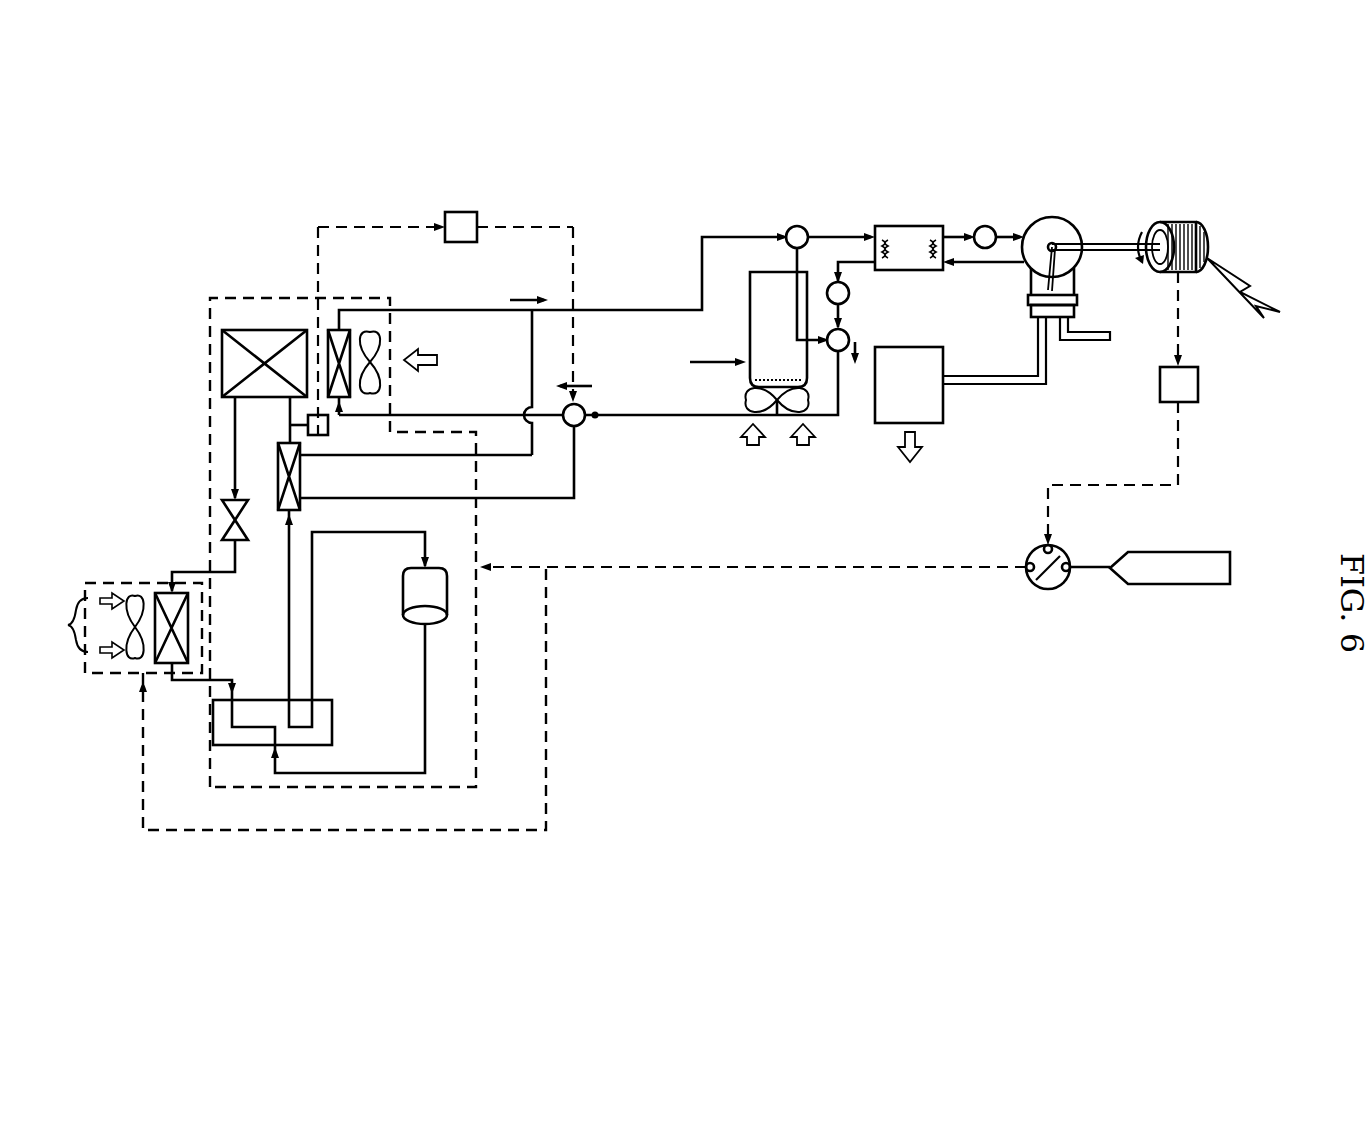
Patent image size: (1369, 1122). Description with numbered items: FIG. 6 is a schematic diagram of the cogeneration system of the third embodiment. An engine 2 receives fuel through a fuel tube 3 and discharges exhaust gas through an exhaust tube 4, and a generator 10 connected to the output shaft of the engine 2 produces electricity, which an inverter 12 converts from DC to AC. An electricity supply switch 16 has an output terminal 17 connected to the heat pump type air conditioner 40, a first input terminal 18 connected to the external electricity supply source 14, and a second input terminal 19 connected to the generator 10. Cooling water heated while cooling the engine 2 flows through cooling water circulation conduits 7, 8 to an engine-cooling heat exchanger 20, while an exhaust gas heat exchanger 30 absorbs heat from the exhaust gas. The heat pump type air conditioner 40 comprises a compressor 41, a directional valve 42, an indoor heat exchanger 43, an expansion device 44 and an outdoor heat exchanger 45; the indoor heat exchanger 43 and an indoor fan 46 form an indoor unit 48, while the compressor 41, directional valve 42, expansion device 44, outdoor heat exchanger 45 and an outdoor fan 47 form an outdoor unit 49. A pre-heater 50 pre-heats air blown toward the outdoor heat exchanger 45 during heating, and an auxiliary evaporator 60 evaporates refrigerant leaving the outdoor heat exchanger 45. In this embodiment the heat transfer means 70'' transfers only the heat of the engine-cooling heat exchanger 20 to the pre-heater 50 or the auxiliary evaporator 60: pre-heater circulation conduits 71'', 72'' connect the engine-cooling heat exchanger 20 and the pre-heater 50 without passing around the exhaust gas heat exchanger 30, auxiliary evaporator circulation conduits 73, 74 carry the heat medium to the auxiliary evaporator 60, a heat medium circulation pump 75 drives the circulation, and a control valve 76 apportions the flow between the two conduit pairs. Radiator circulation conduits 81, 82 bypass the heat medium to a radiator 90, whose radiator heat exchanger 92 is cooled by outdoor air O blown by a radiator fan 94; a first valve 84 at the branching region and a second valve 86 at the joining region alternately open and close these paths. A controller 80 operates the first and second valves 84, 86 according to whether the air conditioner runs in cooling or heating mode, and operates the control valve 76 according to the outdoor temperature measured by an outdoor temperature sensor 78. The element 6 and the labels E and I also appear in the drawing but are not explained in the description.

The engine 2 is at (1060, 222).
The fuel tube 3 is at (1090, 341).
The exhaust tube 4 is at (995, 385).
The coolant pump 6 is at (990, 226).
The cooling water circulation conduit 7 is at (1000, 263).
The cooling water circulation conduit 8 is at (950, 236).
The generator 10 is at (1180, 223).
The inverter 12 is at (1198, 383).
The external electricity supply source 14 is at (1180, 584).
The electricity supply switch 16 is at (1040, 590).
The output terminal 17 is at (1030, 560).
The first input terminal 18 is at (1066, 580).
The second input terminal 19 is at (1054, 549).
The engine-cooling heat exchanger 20 is at (900, 235).
The exhaust gas heat exchanger 30 is at (895, 423).
The heat pump type air conditioner 40 is at (127, 413).
The compressor 41 is at (403, 590).
The directional valve 42 is at (230, 745).
The indoor heat exchanger 43 is at (155, 663).
The expansion device 44 is at (222, 520).
The outdoor heat exchanger 45 is at (222, 358).
The indoor fan 46 is at (133, 596).
The outdoor fan 47 is at (370, 332).
The indoor unit 48 is at (130, 583).
The outdoor unit 49 is at (210, 312).
The pre-heater 50 is at (339, 330).
The auxiliary evaporator 60 is at (278, 478).
The heat transfer means 70'' is at (427, 668).
The pre-heater circulation conduit 71'' is at (721, 198).
The pre-heater circulation conduit 72'' is at (588, 428).
The auxiliary evaporator circulation conduit 73 is at (555, 500).
The auxiliary evaporator circulation conduit 74 is at (532, 345).
The heat medium circulation pump 75 is at (852, 290).
The control valve 76 is at (586, 405).
The outdoor temperature sensor 78 is at (308, 425).
The controller 80 is at (452, 222).
The radiator circulation conduit 81 is at (838, 417).
The radiator circulation conduit 82 is at (797, 265).
The first valve 84 is at (852, 338).
The second valve 86 is at (803, 227).
The radiator 90 is at (690, 362).
The radiator heat exchanger 92 is at (752, 372).
The radiator fan 94 is at (775, 446).
The exhaust E is at (918, 440).
The outdoor air O is at (440, 362).
The indoor air I is at (87, 625).